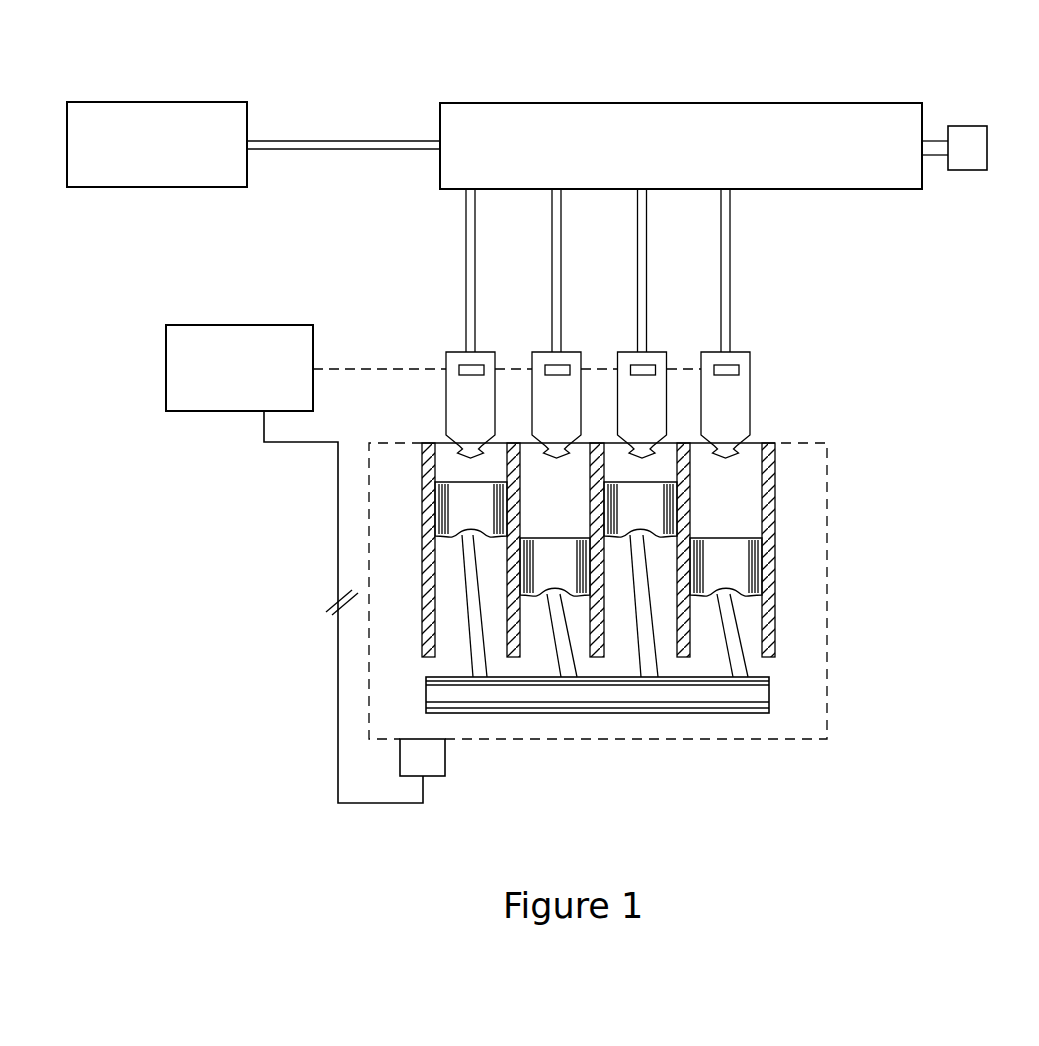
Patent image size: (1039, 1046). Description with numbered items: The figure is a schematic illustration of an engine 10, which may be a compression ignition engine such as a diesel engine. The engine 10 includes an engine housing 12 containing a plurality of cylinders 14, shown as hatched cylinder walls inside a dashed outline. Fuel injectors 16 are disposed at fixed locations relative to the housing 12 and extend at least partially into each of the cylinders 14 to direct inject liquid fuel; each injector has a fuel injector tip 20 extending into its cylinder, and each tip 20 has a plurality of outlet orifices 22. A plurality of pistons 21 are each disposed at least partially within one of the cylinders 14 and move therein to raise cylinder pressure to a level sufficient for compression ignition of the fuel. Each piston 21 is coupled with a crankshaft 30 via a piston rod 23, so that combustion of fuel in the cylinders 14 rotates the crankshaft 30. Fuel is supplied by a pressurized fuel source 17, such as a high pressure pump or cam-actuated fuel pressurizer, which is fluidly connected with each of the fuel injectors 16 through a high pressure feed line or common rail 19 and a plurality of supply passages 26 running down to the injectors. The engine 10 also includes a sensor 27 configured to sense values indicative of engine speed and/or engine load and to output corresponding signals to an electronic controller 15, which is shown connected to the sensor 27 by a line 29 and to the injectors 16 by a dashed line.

The engine 10 is at (203, 542).
The engine housing 12 is at (827, 504).
The cylinders 14 is at (725, 468).
The electronic controller 15 is at (313, 396).
The fuel injectors 16 is at (750, 380).
The pressurized fuel source 17 is at (247, 181).
The common rail 19 is at (922, 185).
The fuel injector tip 20 is at (634, 456).
The pistons 21 is at (745, 566).
The outlet orifices 22 is at (545, 454).
The piston rod 23 is at (740, 664).
The supply passages 26 is at (731, 292).
The sensor 27 is at (445, 768).
The signal line 29 is at (338, 688).
The crankshaft 30 is at (758, 692).